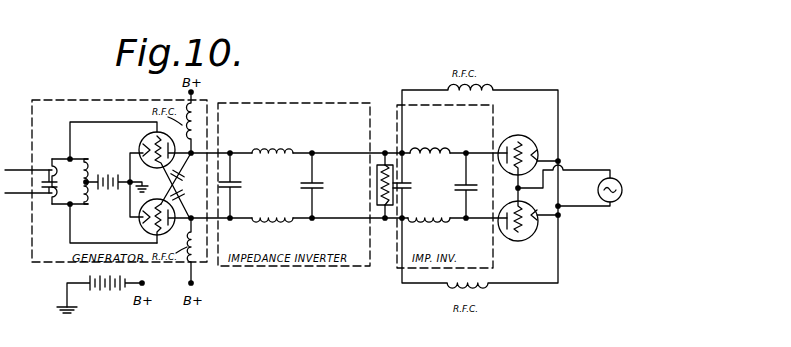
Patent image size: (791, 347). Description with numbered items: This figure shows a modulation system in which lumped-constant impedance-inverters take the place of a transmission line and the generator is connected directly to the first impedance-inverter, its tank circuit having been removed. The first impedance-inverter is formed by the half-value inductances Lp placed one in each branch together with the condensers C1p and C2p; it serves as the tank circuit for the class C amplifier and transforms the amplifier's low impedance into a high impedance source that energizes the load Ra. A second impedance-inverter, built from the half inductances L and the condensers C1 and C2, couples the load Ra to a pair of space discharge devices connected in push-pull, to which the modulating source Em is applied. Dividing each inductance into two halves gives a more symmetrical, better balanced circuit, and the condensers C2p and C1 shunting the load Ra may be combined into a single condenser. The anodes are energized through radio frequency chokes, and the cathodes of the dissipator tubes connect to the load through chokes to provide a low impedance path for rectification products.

The half-inductance branches of first impedance-inverter Lp is at (273, 187).
The condenser of first impedance-inverter C1p is at (238, 185).
The condenser of first impedance-inverter in shunt with load C2p is at (305, 185).
The load Ra is at (374, 187).
The inductance of second impedance-inverter L is at (429, 187).
The condenser of second impedance-inverter in shunt with load C1 is at (411, 185).
The condenser of second impedance-inverter C2 is at (475, 185).
The modulating voltage source Em is at (585, 186).